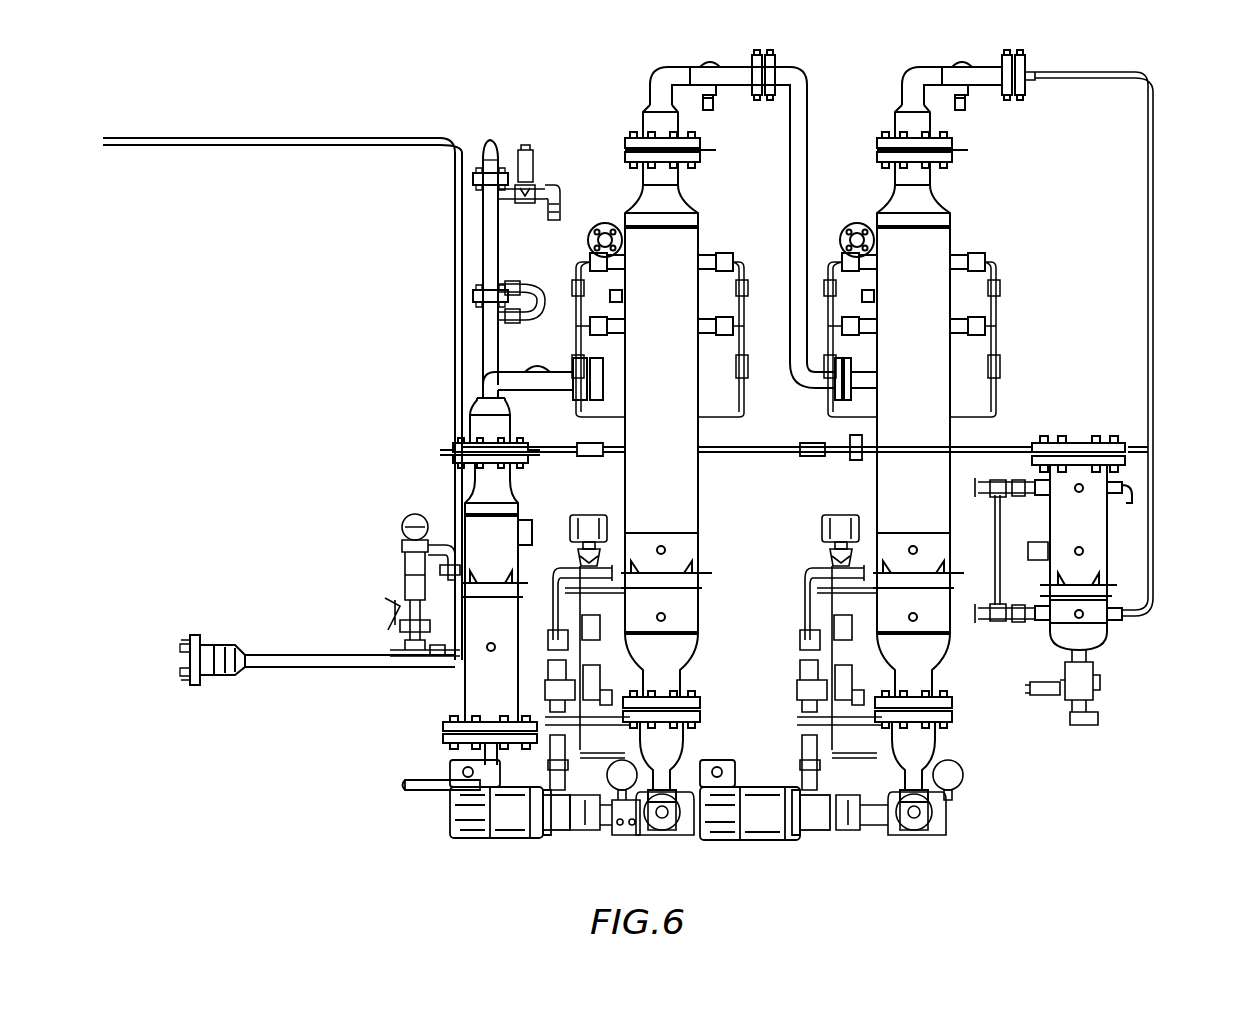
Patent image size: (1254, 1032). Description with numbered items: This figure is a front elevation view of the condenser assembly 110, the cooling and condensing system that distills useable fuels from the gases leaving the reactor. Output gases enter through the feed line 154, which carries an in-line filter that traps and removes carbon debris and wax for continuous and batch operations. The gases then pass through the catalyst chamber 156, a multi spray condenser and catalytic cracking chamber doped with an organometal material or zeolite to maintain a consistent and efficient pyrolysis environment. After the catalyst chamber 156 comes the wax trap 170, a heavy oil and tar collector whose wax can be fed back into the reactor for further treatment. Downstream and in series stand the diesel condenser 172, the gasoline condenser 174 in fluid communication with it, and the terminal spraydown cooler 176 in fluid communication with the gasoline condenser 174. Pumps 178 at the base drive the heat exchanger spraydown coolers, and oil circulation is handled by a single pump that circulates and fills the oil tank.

The condenser assembly 110 is at (581, 91).
The feed line 154 is at (182, 660).
The catalyst chamber 156 is at (490, 347).
The wax trap 170 is at (460, 682).
The diesel condenser 172 is at (660, 245).
The gasoline condenser 174 is at (930, 243).
The terminal spraydown cooler 176 is at (1078, 525).
The pumps 178 is at (503, 842).